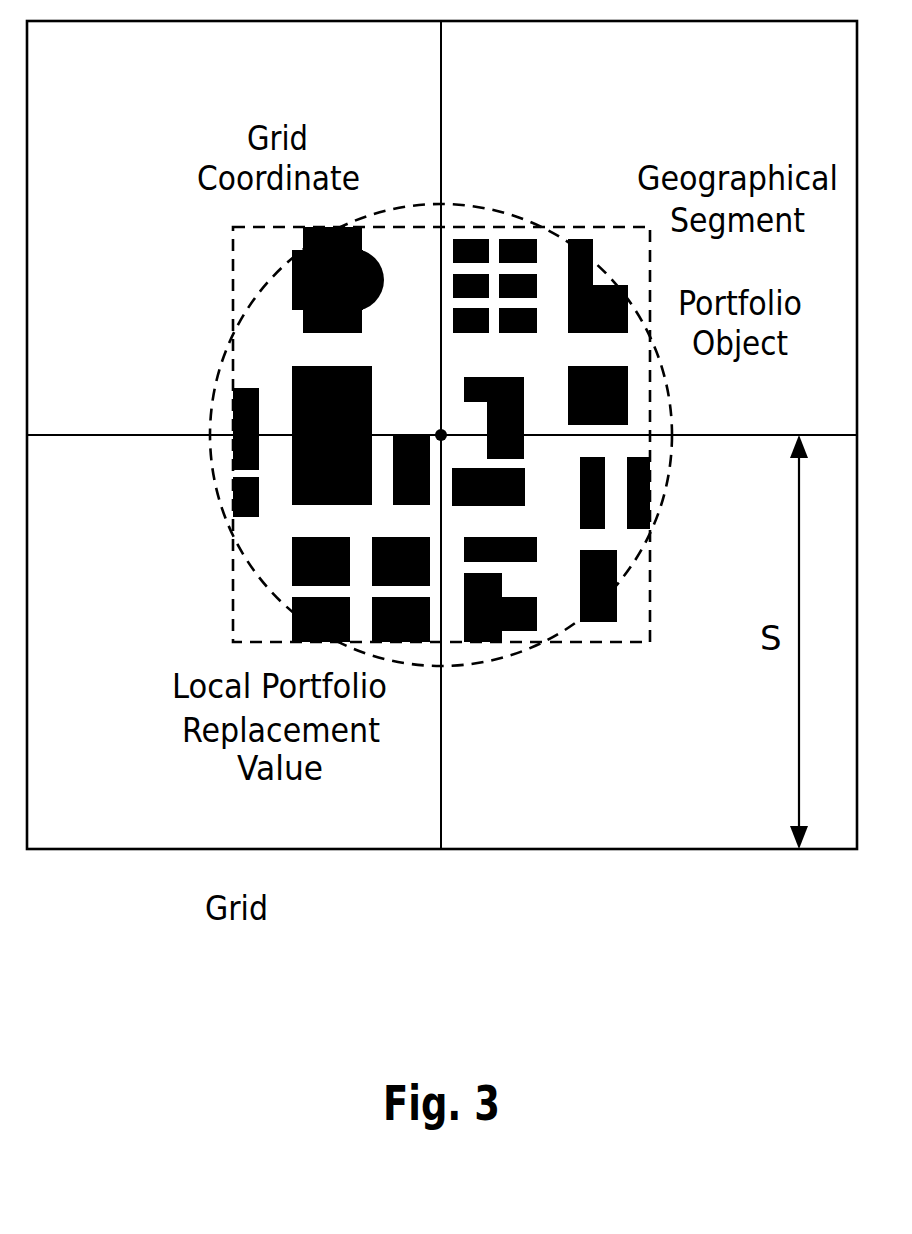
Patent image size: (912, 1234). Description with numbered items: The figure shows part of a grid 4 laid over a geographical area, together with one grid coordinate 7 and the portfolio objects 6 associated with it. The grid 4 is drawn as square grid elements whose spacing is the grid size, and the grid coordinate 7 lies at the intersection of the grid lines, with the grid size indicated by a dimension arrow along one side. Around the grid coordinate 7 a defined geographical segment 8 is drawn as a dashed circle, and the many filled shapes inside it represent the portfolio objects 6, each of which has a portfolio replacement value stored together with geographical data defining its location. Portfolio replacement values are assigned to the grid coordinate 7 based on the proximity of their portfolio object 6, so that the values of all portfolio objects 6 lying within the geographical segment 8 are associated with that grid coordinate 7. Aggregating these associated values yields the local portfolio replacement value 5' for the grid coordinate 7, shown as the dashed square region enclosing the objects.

The grid 4 is at (220, 849).
The local portfolio replacement value 5' is at (390, 450).
The portfolio object 6 is at (628, 382).
The grid coordinate 7 is at (441, 435).
The geographical segment 8 is at (617, 228).